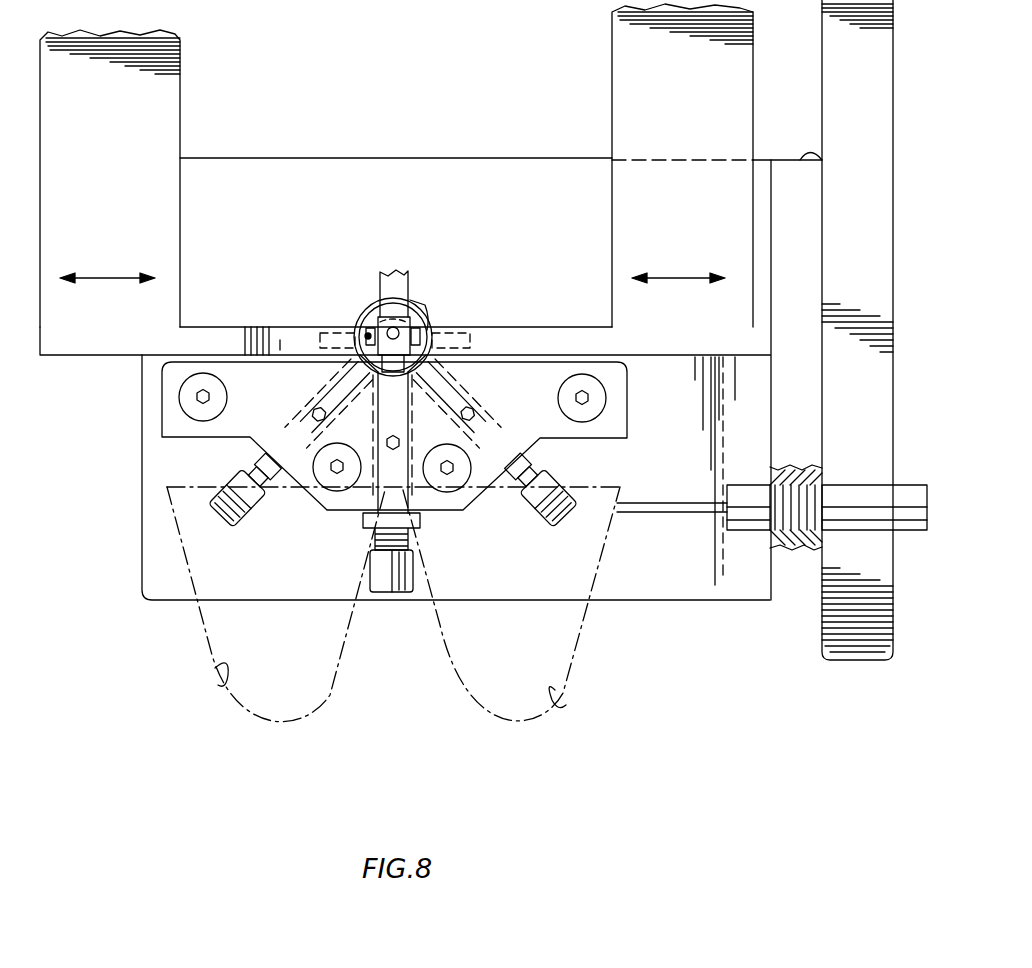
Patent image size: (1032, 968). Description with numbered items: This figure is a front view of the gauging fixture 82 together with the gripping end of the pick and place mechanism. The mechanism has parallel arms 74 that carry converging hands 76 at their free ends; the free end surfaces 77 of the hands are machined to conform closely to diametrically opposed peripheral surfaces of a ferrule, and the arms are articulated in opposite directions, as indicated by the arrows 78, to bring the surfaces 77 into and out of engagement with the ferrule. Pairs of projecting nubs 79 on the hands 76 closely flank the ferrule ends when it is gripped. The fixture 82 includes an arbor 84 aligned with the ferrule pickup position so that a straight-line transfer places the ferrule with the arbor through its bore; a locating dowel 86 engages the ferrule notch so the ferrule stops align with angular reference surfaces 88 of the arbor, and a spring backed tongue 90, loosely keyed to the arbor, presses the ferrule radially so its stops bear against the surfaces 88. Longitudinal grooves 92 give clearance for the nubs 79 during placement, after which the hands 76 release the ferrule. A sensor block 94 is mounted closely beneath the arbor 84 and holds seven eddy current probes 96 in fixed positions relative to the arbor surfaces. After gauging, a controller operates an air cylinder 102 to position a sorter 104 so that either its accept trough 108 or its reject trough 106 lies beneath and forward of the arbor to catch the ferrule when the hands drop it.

The parallel arms 74 is at (160, 100).
The converging hands 76 is at (225, 327).
The free end surfaces 77 is at (372, 340).
The arrows 78 is at (107, 278).
The projecting nubs 79 is at (352, 355).
The gauging fixture 82 is at (325, 512).
The arbor 84 is at (377, 343).
The locating dowel 86 is at (428, 303).
The angular reference surfaces 88 is at (421, 398).
The spring backed tongue 90 is at (410, 273).
The longitudinal grooves 92 is at (368, 336).
The sensor block 94 is at (230, 432).
The eddy current probes 96 is at (228, 512).
The air cylinder 102 is at (850, 500).
The sorter 104 is at (255, 728).
The sorter trough 106 is at (212, 672).
The trough 108 is at (562, 700).